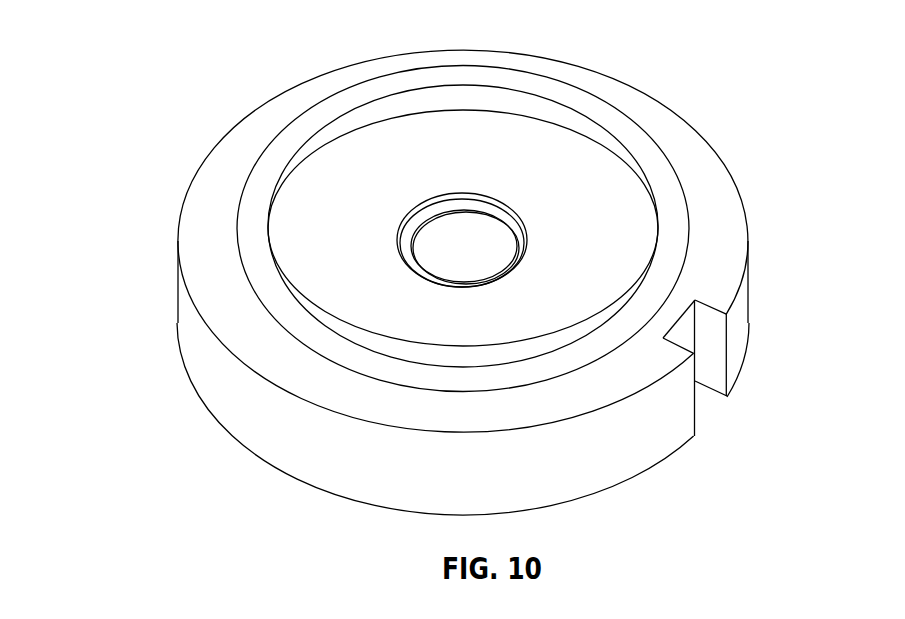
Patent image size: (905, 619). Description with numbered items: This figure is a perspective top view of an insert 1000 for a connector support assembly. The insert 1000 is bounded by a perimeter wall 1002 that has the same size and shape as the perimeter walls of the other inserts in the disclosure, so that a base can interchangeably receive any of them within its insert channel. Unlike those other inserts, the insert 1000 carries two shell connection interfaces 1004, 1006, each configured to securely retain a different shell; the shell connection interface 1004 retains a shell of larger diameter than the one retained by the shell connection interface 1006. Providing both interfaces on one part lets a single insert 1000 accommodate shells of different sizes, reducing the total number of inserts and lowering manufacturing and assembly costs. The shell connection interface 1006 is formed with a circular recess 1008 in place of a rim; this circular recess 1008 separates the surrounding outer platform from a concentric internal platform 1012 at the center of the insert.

The insert 1000 is at (416, 258).
The perimeter wall 1002 is at (307, 450).
The shell connection interface 1004 is at (668, 162).
The shell connection interface 1006 is at (337, 193).
The circular recess 1008 is at (423, 214).
The internal platform 1012 is at (488, 232).